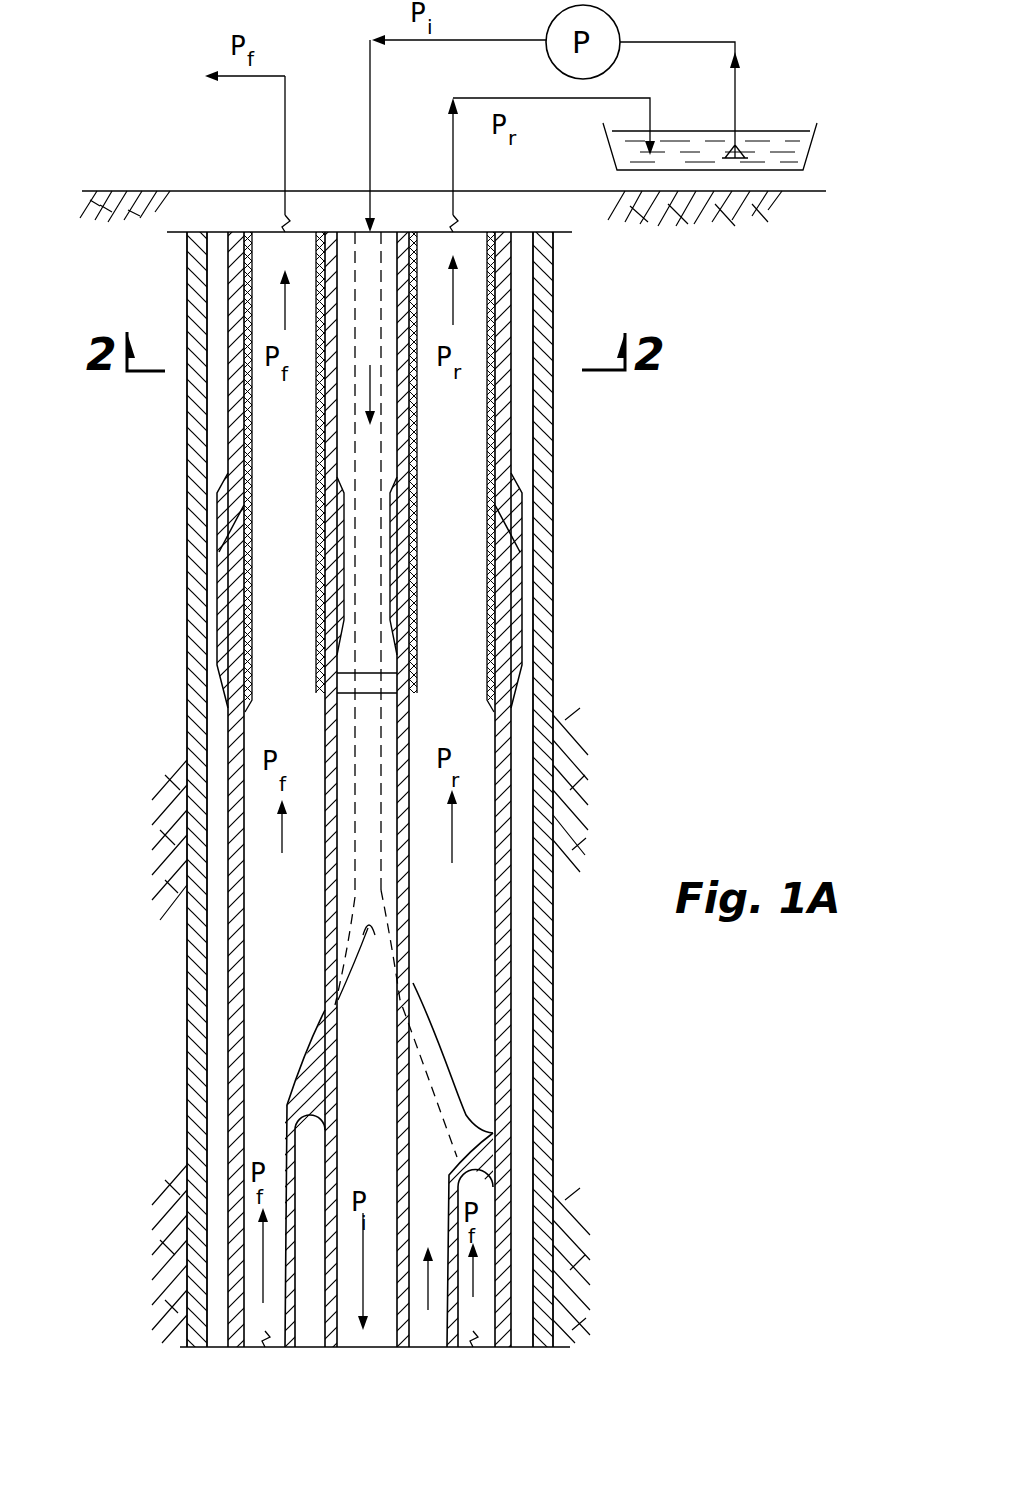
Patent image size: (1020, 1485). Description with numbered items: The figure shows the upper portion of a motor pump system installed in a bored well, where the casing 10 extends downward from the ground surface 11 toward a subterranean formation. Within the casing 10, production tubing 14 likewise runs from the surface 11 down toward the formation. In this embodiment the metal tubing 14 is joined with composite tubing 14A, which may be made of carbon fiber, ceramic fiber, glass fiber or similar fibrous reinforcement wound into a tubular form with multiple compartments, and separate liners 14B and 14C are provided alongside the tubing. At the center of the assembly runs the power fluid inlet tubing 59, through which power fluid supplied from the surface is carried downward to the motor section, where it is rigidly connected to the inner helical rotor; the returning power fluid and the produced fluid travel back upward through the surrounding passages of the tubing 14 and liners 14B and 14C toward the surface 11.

The casing 10 is at (548, 977).
The surface 11 is at (182, 191).
The production tubing 14 is at (503, 1058).
The composite tubing 14A is at (230, 540).
The liner 14B is at (496, 300).
The liner 14C is at (245, 306).
The power fluid inlet tubing 59 is at (327, 957).